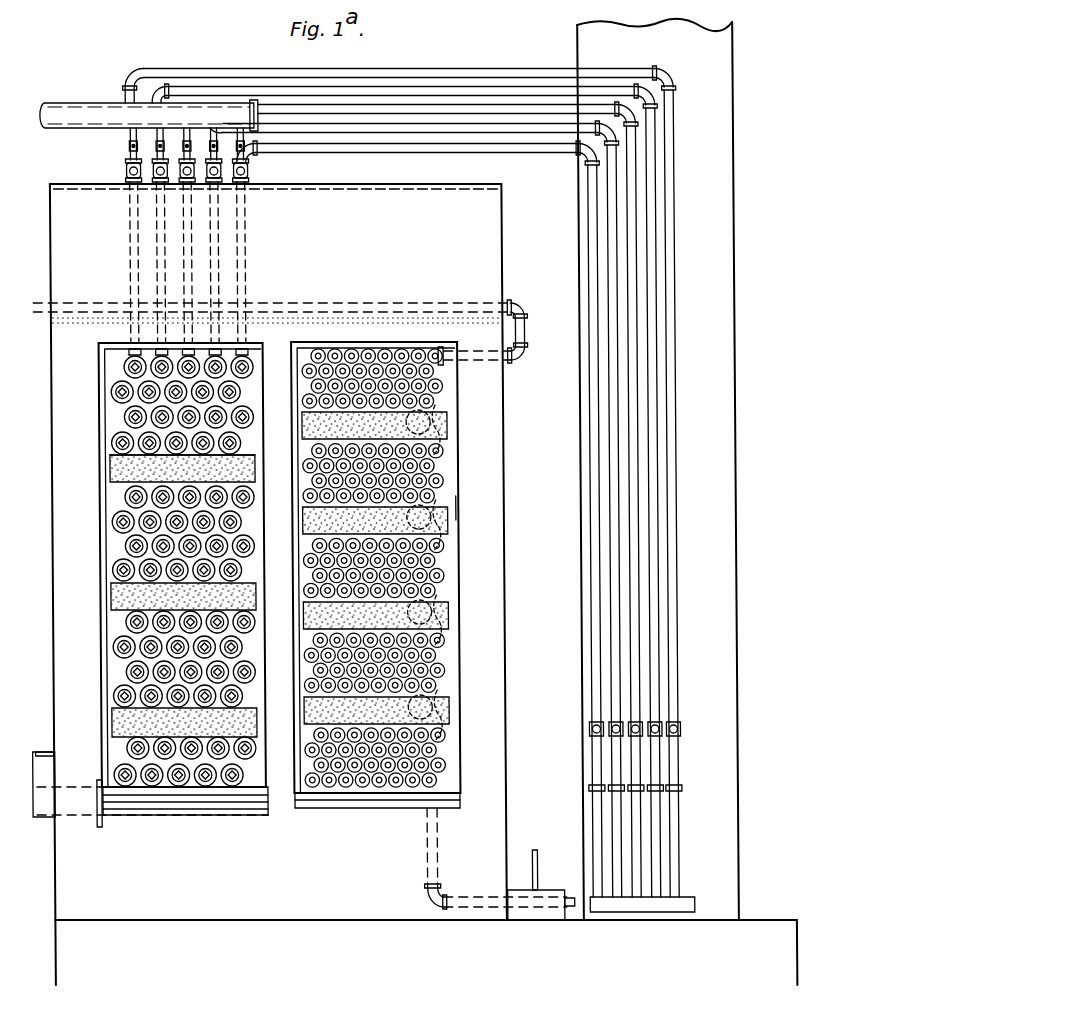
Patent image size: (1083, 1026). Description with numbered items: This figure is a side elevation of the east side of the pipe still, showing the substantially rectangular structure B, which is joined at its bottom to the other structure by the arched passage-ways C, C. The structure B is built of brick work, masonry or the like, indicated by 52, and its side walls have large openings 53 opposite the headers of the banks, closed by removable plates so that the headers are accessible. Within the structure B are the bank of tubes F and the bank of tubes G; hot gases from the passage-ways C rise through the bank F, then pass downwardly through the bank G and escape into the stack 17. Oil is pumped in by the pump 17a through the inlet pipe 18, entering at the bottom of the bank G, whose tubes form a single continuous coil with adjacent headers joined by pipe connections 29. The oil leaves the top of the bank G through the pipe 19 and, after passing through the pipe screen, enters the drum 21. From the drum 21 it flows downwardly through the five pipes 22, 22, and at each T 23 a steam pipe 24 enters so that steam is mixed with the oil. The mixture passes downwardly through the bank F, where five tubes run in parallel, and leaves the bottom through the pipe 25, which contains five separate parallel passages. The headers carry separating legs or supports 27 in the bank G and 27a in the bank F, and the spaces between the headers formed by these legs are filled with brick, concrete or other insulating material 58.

The stack 17 is at (713, 347).
The pump 17a is at (529, 914).
The inlet pipe 18 is at (425, 849).
The pipe 19 is at (505, 358).
The drum 21 is at (58, 112).
The pipes 22 is at (159, 235).
The T 23 is at (281, 171).
The steam pipe 24 is at (397, 110).
The pipe 25 is at (31, 790).
The separating legs 27 is at (445, 513).
The separating legs 27a is at (107, 468).
The pipe connections 29 is at (443, 426).
The brick work 52 is at (497, 523).
The openings 53 is at (101, 431).
The insulating material 58 is at (110, 590).
The rectangular structure B is at (499, 249).
The arched passage-ways C is at (46, 858).
The bank of tubes F is at (132, 382).
The bank of tubes G is at (307, 763).